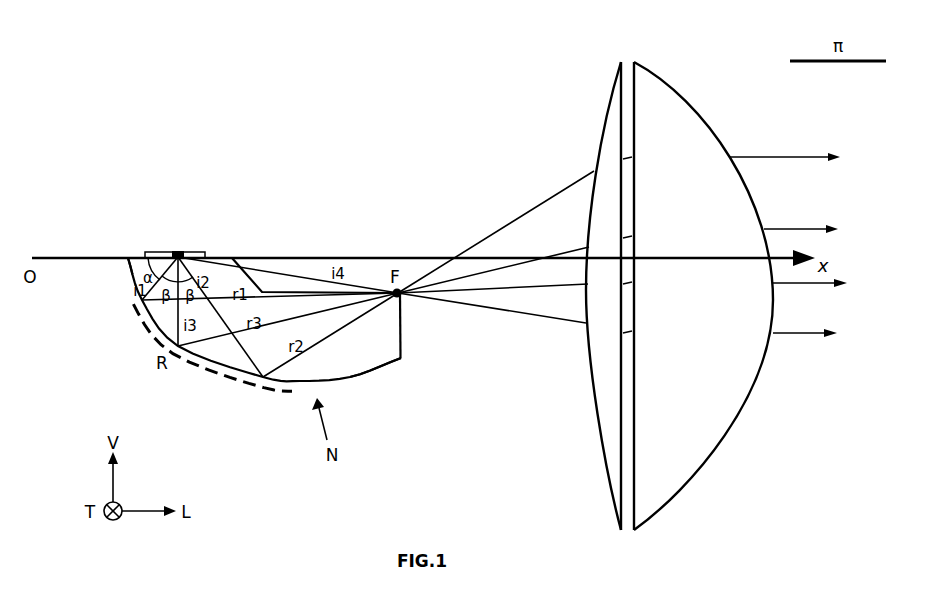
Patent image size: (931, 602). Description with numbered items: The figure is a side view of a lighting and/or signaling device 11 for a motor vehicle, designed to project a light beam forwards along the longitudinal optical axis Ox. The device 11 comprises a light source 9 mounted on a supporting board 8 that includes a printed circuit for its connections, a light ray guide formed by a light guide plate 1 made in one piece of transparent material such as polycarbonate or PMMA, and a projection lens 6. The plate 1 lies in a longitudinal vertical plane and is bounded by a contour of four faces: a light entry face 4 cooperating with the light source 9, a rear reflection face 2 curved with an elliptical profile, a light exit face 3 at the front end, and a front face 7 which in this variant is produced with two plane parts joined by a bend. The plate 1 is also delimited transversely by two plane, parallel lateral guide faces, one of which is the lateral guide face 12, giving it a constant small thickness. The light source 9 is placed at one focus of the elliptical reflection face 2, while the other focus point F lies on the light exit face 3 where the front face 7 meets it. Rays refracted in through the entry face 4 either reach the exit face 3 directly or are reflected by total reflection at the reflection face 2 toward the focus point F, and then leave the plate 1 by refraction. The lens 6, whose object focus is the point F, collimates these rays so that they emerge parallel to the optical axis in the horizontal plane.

The light guide plate 1 is at (225, 352).
The reflection face 2 is at (140, 313).
The light exit face 3 is at (405, 345).
The light entry face 4 is at (136, 255).
The lens 6 is at (676, 540).
The front face 7 is at (263, 284).
The supporting board 8 is at (198, 252).
The light source 9 is at (178, 252).
The lighting and/or signaling device 11 is at (246, 72).
The lateral guide face 12 is at (377, 355).